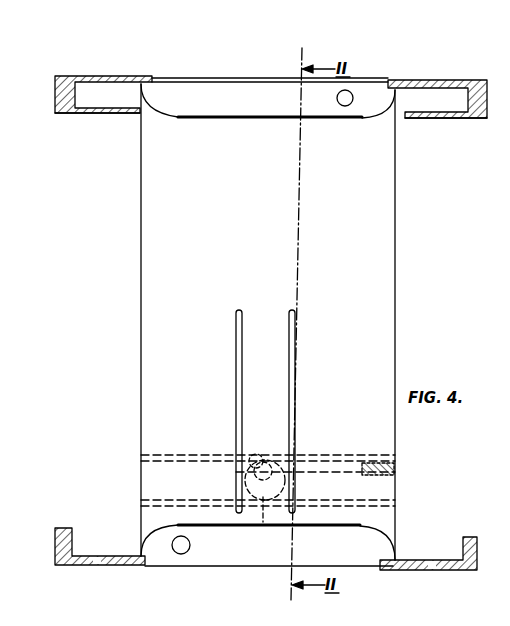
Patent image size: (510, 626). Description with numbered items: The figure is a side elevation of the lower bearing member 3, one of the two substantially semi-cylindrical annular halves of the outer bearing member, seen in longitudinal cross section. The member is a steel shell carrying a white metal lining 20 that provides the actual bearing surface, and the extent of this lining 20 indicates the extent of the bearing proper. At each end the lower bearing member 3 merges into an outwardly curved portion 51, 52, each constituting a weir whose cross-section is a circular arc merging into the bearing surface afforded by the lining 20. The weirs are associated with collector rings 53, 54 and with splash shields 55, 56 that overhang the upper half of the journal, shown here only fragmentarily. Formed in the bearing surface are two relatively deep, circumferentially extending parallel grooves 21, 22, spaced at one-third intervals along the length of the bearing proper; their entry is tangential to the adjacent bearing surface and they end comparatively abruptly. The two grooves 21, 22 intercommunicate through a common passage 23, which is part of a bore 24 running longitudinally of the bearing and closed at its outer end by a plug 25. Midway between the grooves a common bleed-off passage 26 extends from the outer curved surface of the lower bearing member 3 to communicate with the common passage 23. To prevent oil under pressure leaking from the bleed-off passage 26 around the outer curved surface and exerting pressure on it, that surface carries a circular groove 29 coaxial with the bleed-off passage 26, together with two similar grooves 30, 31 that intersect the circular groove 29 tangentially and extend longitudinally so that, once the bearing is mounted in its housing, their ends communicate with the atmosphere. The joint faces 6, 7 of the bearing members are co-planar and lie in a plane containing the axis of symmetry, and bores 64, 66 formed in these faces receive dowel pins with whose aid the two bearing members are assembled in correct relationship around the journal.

The lower bearing member 3 is at (352, 254).
The joint face 6 is at (222, 552).
The joint face 7 is at (241, 82).
The lining 20 is at (210, 118).
The groove 21 is at (236, 380).
The groove 22 is at (296, 368).
The common passage 23 is at (256, 454).
The bore 24 is at (328, 472).
The plug 25 is at (395, 470).
The common bleed-off passage 26 is at (272, 462).
The circular groove 29 is at (264, 524).
The groove 30 is at (190, 455).
The groove 31 is at (187, 500).
The outwardly curved portion 51 is at (162, 102).
The outwardly curved portion 52 is at (378, 102).
The collector ring 53 is at (78, 78).
The collector ring 54 is at (477, 82).
The splash shield 55 is at (84, 114).
The splash shield 56 is at (458, 118).
The bore 64 is at (345, 106).
The bore 66 is at (183, 554).